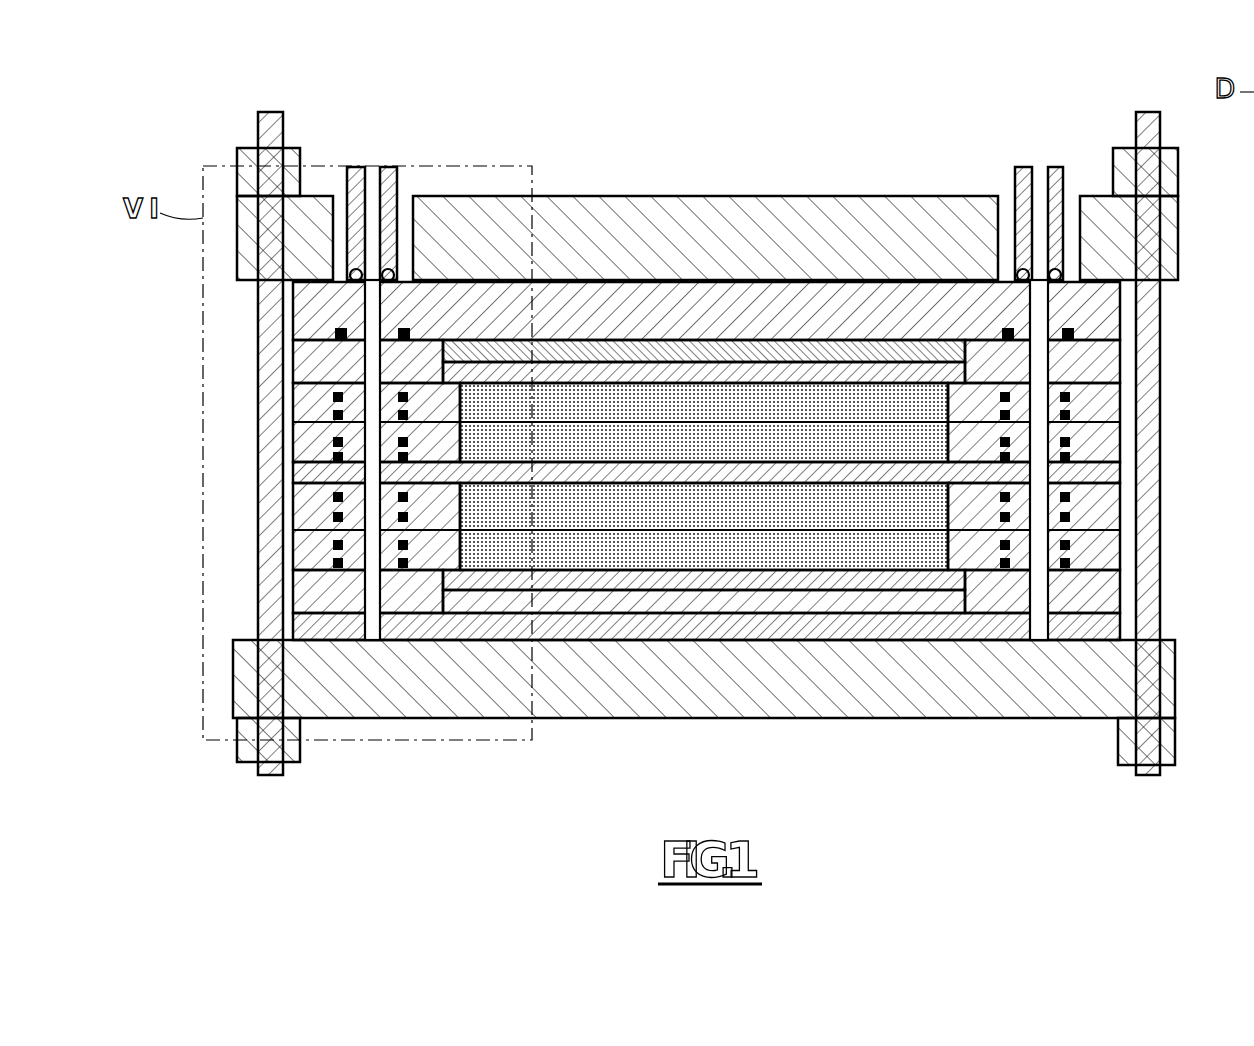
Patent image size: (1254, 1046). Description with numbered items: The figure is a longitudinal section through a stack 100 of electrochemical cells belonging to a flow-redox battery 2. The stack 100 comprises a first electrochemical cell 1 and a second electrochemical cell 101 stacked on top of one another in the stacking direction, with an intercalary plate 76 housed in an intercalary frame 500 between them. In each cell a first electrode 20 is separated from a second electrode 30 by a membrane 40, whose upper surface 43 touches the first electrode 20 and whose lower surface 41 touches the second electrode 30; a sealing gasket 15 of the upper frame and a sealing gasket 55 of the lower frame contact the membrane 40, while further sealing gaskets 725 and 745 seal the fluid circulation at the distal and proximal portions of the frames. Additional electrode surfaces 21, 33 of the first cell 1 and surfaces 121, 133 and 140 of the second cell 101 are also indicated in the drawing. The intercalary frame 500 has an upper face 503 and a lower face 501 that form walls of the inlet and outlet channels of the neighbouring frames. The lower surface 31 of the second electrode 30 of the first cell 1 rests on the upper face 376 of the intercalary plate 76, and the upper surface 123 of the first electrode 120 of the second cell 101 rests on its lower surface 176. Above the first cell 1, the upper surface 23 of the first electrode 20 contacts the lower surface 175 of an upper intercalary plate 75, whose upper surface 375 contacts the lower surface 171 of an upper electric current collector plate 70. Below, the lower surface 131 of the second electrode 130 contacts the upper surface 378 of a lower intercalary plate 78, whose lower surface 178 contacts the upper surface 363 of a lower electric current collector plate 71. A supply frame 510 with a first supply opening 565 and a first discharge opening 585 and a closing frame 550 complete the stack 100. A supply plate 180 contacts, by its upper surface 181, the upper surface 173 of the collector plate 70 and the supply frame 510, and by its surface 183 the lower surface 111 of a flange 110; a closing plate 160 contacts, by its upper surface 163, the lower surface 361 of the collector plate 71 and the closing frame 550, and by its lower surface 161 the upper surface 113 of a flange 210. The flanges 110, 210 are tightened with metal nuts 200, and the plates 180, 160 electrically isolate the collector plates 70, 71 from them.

The flow-redox battery 2 is at (138, 100).
The sealing gasket 15 is at (378, 560).
The first electrode 20 is at (648, 462).
The electrolyte membrane 21 is at (713, 438).
The upper surface of the first electrode 23 is at (820, 462).
The second electrode 30 is at (752, 362).
The lower surface of the second electrode 31 is at (378, 600).
The anode separator 33 is at (540, 400).
The membrane 40 is at (458, 408).
The lower surface of the membrane 41 is at (597, 440).
The upper surface of the membrane 43 is at (500, 394).
The sealing gasket 55 is at (258, 748).
The upper electric current collector plate 70 is at (972, 272).
The lower electric current collector plate 71 is at (635, 507).
The upper intercalary plate 75 is at (880, 547).
The intercalary plate 76 is at (300, 470).
The lower intercalary plate 78 is at (430, 562).
The stack 100 is at (178, 455).
The second electrochemical cell 101 is at (230, 483).
The first electrochemical cell 1 is at (230, 383).
The flange 110 is at (1020, 330).
The lower surface of the flange 111 is at (1058, 352).
The upper surface of the flange 113 is at (800, 627).
The first electrode 120 is at (495, 542).
The cathode outlet passage 121 is at (920, 612).
The upper surface of the first electrode 123 is at (660, 567).
The second electrode 130 is at (540, 562).
The lower surface of the second electrode 131 is at (700, 602).
The outlet passage 133 is at (850, 542).
The cathode catalyst layer 140 is at (595, 502).
The closing plate 160 is at (262, 690).
The lower surface of the closing plate 161 is at (740, 652).
The upper surface of the closing plate 163 is at (1100, 637).
The lower surface of the upper collector plate 171 is at (1100, 365).
The upper surface of the upper collector plate 173 is at (1100, 340).
The lower surface of the upper intercalary plate 175 is at (1110, 430).
The lower surface of the intercalary plate 176 is at (330, 612).
The lower surface of the lower intercalary plate 178 is at (960, 602).
The supply plate 180 is at (1120, 230).
The upper surface of the supply plate 181 is at (893, 410).
The upper surface of the supply plate 183 is at (1000, 300).
The nuts 200 is at (237, 180).
The flange 210 is at (1050, 690).
The lower surface of the lower collector plate 361 is at (962, 742).
The upper surface of the lower collector plate 363 is at (640, 722).
The upper surface of the upper intercalary plate 375 is at (812, 395).
The upper face of the intercalary plate 376 is at (835, 432).
The upper surface of the lower intercalary plate 378 is at (1090, 605).
The intercalary frame 500 is at (1105, 500).
The lower face of the intercalary frame 501 is at (1100, 540).
The upper face of the intercalary frame 503 is at (1100, 470).
The supply frame 510 is at (300, 346).
The closing frame 550 is at (300, 626).
The first supply opening 565 is at (300, 320).
The first discharge opening 585 is at (1110, 290).
The sealing gasket 725 is at (325, 383).
The sealing gasket 745 is at (320, 537).